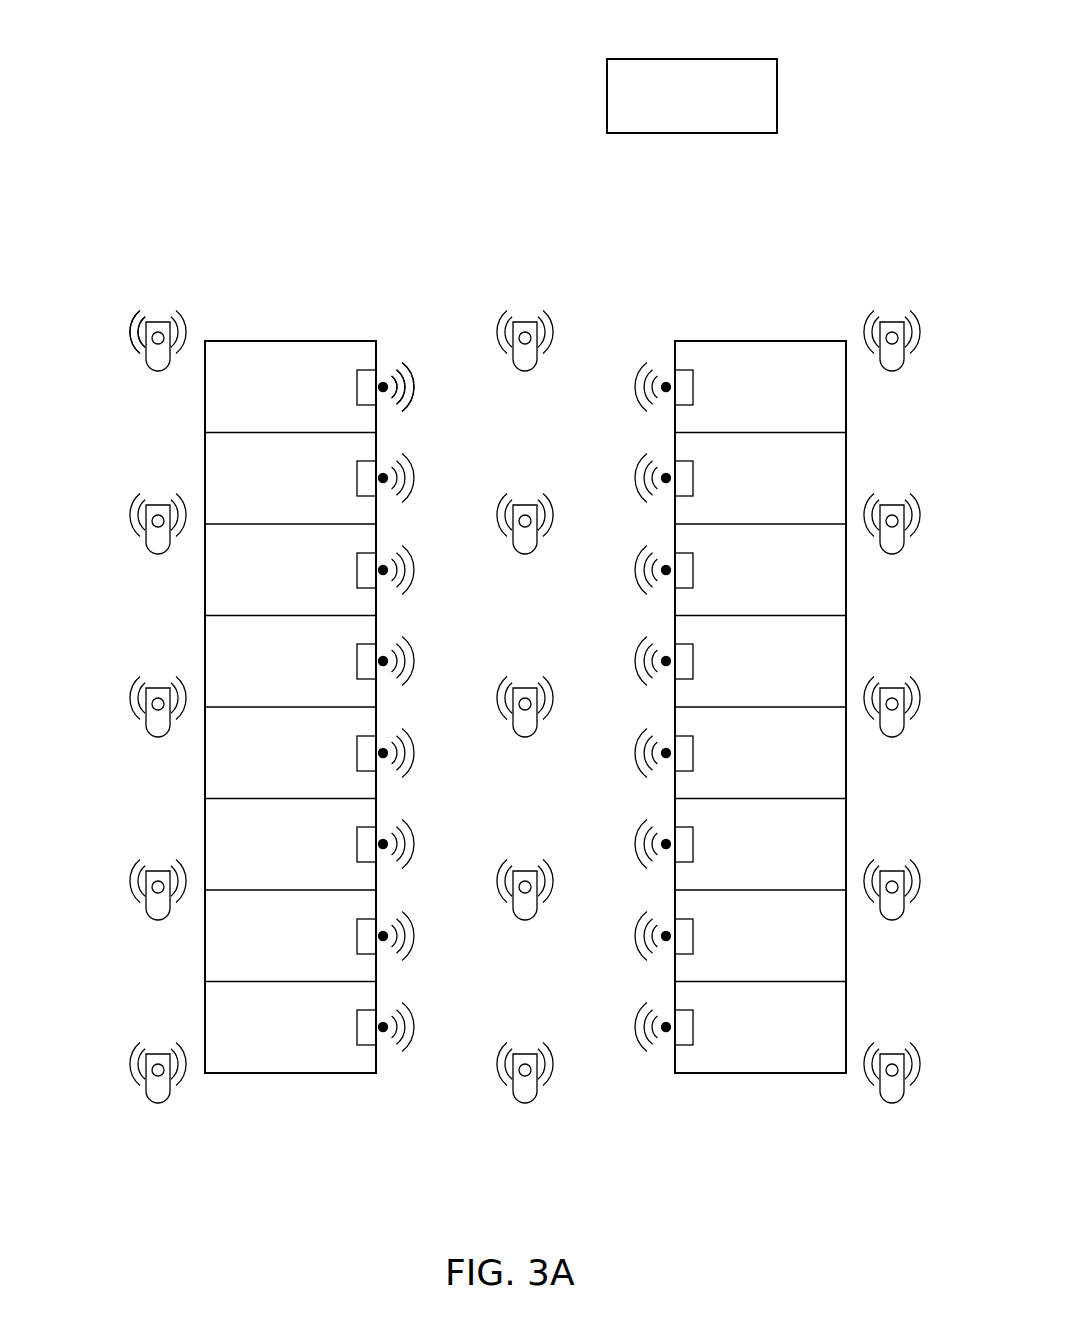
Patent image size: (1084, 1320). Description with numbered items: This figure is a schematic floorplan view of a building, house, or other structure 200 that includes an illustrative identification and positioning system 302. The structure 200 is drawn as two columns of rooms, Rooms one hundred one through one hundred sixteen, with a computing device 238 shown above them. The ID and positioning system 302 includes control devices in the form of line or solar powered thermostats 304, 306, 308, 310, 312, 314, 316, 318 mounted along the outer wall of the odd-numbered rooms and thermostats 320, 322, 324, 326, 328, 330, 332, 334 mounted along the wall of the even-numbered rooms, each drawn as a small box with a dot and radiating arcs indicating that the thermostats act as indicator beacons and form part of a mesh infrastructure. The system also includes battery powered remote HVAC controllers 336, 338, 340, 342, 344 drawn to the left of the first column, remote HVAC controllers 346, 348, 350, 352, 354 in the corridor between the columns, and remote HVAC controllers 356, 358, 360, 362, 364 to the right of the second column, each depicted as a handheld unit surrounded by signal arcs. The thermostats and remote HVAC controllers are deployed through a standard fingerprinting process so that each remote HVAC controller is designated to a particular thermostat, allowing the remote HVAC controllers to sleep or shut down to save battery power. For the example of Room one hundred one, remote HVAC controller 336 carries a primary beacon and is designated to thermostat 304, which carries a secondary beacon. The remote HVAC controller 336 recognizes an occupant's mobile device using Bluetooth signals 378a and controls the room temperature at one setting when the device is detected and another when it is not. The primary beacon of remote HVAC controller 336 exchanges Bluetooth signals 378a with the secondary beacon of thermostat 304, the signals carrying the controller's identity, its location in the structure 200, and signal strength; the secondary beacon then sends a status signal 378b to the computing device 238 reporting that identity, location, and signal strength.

The computing device 238 is at (690, 59).
The structure 200 is at (478, 244).
The identification and positioning system 302 is at (168, 242).
The thermostat 304 is at (399, 401).
The thermostat 306 is at (399, 492).
The thermostat 308 is at (399, 584).
The thermostat 310 is at (399, 675).
The thermostat 312 is at (399, 767).
The thermostat 314 is at (399, 858).
The thermostat 316 is at (399, 950).
The thermostat 318 is at (399, 1041).
The thermostat 320 is at (650, 401).
The thermostat 322 is at (650, 492).
The thermostat 324 is at (650, 584).
The thermostat 326 is at (650, 675).
The thermostat 328 is at (650, 767).
The thermostat 330 is at (650, 858).
The thermostat 332 is at (650, 950).
The thermostat 334 is at (650, 1041).
The remote HVAC controller 336 is at (120, 342).
The remote HVAC controller 338 is at (120, 525).
The remote HVAC controller 340 is at (120, 708).
The remote HVAC controller 342 is at (120, 891).
The remote HVAC controller 344 is at (120, 1074).
The remote HVAC controller 346 is at (543, 322).
The remote HVAC controller 348 is at (543, 505).
The remote HVAC controller 350 is at (543, 688).
The remote HVAC controller 352 is at (543, 871).
The remote HVAC controller 354 is at (543, 1054).
The remote HVAC controller 356 is at (910, 322).
The remote HVAC controller 358 is at (910, 505).
The remote HVAC controller 360 is at (910, 688).
The remote HVAC controller 362 is at (910, 871).
The remote HVAC controller 364 is at (910, 1054).
The Bluetooth signals 378a is at (138, 309).
The status signal 378b is at (417, 364).